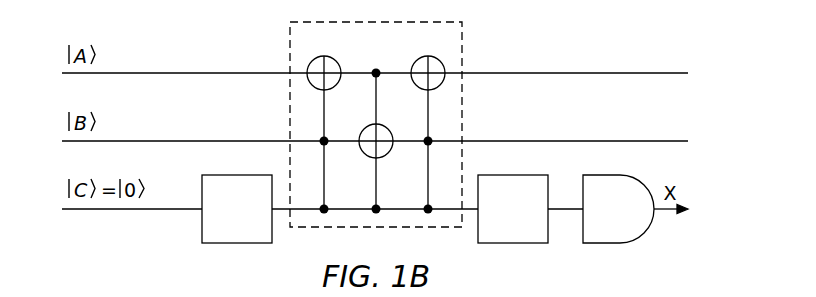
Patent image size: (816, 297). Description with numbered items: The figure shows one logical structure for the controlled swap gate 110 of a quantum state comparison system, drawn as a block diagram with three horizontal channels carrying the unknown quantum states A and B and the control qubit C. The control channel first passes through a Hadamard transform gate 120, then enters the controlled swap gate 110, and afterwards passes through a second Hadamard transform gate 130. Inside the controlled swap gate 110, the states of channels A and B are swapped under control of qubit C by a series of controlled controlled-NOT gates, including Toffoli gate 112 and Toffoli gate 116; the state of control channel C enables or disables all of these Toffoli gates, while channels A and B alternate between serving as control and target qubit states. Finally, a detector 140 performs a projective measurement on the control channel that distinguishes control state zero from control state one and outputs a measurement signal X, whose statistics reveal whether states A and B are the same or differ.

The controlled swap gate 110 is at (361, 48).
The Toffoli gate 112 is at (332, 82).
The Toffoli gate 116 is at (420, 82).
The Hadamard transform gate 120 is at (222, 232).
The Hadamard transform gate 130 is at (498, 232).
The detector 140 is at (603, 220).